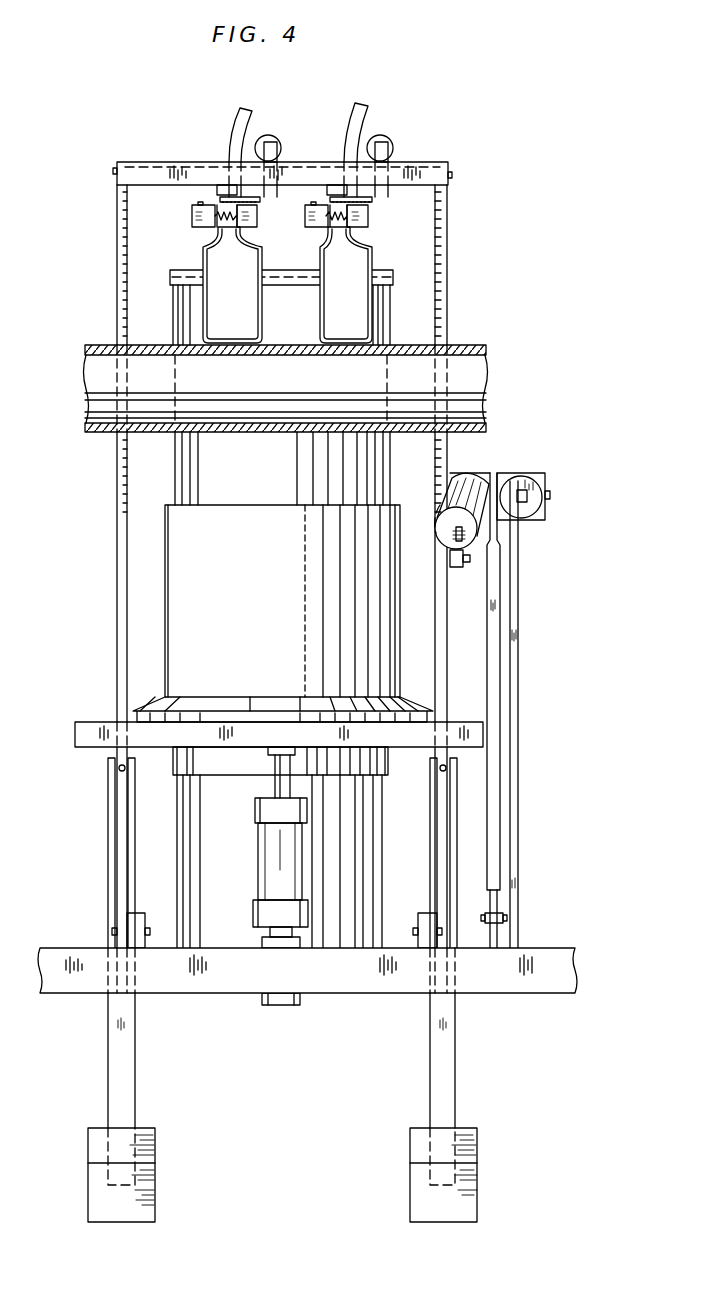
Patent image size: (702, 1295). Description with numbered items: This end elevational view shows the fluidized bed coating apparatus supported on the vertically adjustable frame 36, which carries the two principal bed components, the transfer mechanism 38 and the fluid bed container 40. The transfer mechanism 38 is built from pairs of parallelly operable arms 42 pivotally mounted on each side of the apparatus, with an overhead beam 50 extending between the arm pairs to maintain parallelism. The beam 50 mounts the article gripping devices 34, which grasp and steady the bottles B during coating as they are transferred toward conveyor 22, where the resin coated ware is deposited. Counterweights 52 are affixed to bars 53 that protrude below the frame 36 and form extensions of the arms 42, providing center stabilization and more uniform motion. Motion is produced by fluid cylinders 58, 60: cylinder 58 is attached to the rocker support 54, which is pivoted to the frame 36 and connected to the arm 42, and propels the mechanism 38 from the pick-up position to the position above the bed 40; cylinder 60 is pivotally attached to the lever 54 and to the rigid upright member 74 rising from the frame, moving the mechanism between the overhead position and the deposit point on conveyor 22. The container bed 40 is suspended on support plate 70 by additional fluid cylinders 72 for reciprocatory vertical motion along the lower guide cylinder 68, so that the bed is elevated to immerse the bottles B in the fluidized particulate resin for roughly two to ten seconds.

The conveyor 22 is at (286, 425).
The article gripping device 34 is at (177, 223).
The frame 36 is at (307, 990).
The transfer mechanism 38 is at (287, 534).
The fluid bed container 40 is at (245, 493).
The arm 42 is at (90, 513).
The overhead beam 50 is at (284, 152).
The counterweight 52 is at (413, 1215).
The bar 53 is at (437, 1072).
The rocker support 54 is at (524, 710).
The fluid cylinder 58 is at (474, 499).
The fluid cylinder 60 is at (541, 486).
The lower guide cylinder 68 is at (282, 853).
The support plate 70 is at (261, 750).
The fluid cylinder 72 is at (261, 876).
The rigid upright member 74 is at (537, 714).
The bottles B is at (287, 285).